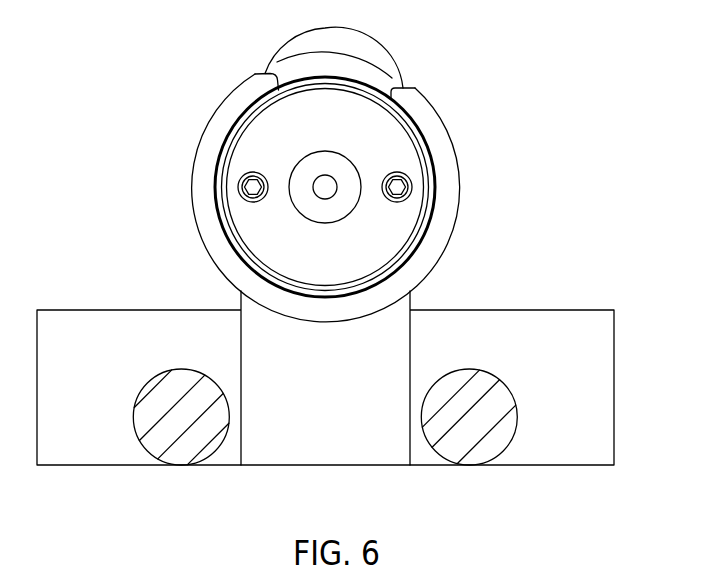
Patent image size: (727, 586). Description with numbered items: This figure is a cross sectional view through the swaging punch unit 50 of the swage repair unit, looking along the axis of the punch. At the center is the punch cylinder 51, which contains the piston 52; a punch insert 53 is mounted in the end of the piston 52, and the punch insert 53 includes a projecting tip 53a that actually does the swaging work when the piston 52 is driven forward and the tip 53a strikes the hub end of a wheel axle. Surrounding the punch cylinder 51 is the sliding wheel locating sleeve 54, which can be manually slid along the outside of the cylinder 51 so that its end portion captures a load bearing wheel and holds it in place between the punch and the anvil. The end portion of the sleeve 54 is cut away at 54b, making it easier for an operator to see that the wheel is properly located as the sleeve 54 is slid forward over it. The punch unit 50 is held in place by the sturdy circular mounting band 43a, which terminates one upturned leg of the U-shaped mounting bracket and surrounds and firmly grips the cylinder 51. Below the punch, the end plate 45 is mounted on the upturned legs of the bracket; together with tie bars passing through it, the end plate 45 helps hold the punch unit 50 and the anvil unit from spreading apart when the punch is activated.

The circular mounting band 43a is at (362, 68).
The end plate 45 is at (605, 372).
The swage punch unit 50 is at (313, 163).
The punch cylinder 51 is at (407, 115).
The piston 52 is at (337, 127).
The punch insert 53 is at (347, 175).
The projecting tip 53a is at (331, 191).
The wheel locating sleeve 54 is at (448, 171).
The cut away 54b is at (334, 46).